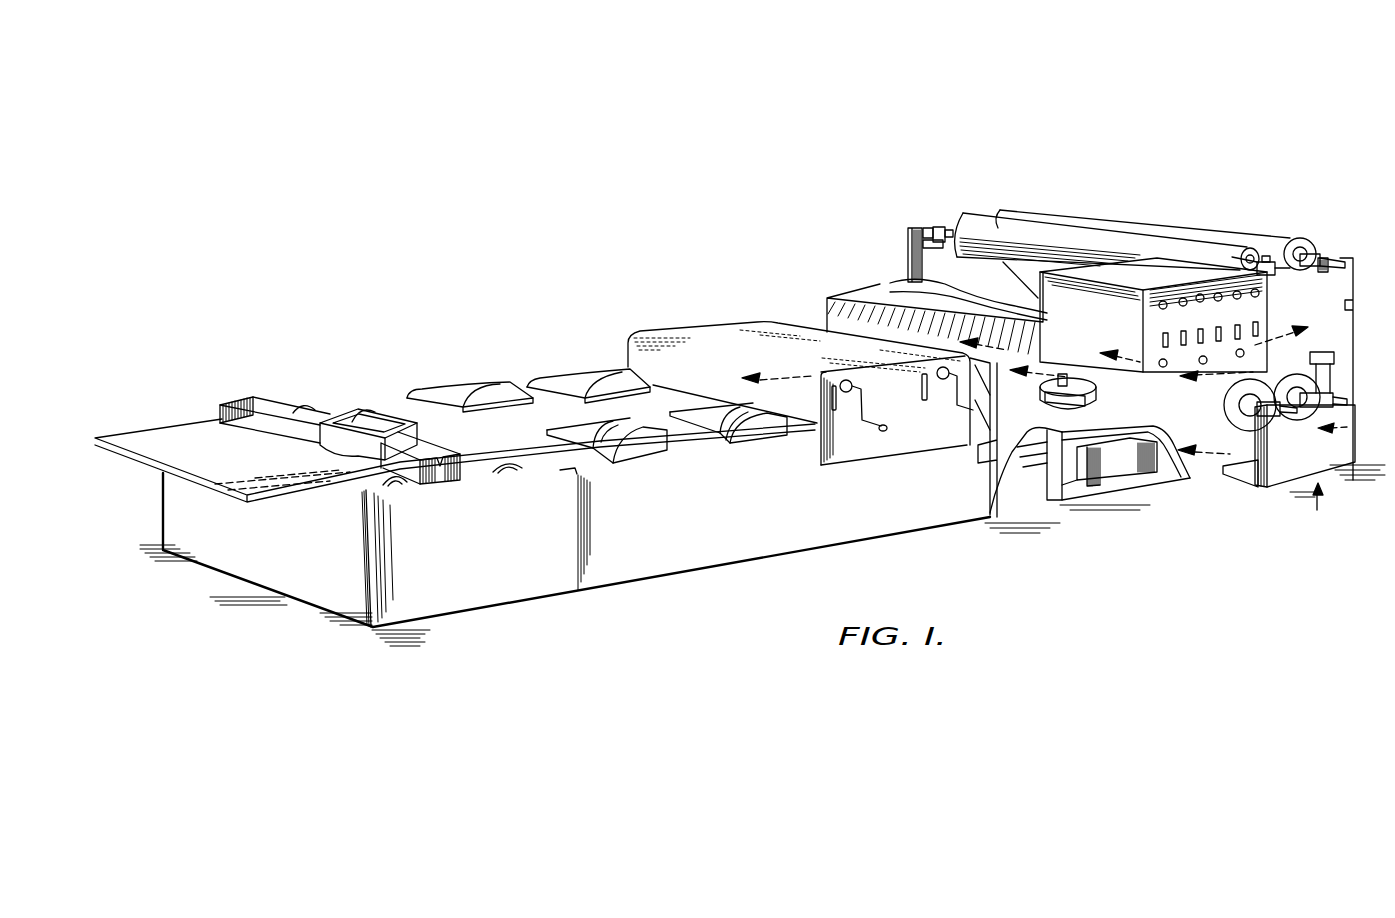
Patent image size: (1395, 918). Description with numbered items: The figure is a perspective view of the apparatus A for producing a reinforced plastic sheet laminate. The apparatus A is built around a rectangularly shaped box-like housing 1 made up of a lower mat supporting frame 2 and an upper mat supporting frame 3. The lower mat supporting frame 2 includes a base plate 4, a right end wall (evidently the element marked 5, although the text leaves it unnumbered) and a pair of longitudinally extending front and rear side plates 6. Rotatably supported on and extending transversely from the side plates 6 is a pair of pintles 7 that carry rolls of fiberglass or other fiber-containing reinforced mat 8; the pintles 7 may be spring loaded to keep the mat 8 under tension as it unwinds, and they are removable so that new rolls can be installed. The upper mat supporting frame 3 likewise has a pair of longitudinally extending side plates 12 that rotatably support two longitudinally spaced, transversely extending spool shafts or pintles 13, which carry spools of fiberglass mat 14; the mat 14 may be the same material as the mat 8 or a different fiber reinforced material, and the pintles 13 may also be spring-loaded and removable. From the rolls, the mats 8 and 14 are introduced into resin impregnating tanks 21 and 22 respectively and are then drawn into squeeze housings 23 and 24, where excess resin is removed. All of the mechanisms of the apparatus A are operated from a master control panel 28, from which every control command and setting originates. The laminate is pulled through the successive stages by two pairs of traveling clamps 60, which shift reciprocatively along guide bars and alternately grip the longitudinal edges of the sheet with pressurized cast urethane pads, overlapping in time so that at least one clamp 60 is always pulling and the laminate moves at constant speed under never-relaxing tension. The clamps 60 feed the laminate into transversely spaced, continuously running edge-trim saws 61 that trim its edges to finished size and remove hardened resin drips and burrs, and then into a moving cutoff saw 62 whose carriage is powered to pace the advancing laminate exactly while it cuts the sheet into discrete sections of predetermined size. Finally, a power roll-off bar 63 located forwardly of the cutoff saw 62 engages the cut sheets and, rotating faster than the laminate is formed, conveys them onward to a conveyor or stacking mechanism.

The apparatus A is at (667, 311).
The housing 1 is at (1291, 337).
The lower mat supporting frame 2 is at (1262, 483).
The upper mat supporting frame 3 is at (1346, 273).
The base plate 4 is at (1210, 498).
The direction arrow 5 is at (860, 355).
The side plates 6 is at (1283, 460).
The pintles 7 is at (1290, 413).
The reinforced mat 8 is at (1237, 405).
The side plates 12 is at (917, 228).
The spool shafts or pintles 13 is at (1317, 268).
The fiberglass mat 14 is at (1110, 228).
The resin impregnating tank 21 is at (1167, 458).
The resin impregnating tank 22 is at (983, 310).
The squeeze housing 23 is at (867, 297).
The squeeze housing 24 is at (1107, 472).
The master control panel 28 is at (1096, 345).
The traveling clamps 60 is at (473, 385).
The edge-trim saws 61 is at (510, 473).
The cutoff saw 62 is at (362, 399).
The power roll-off bar 63 is at (400, 485).